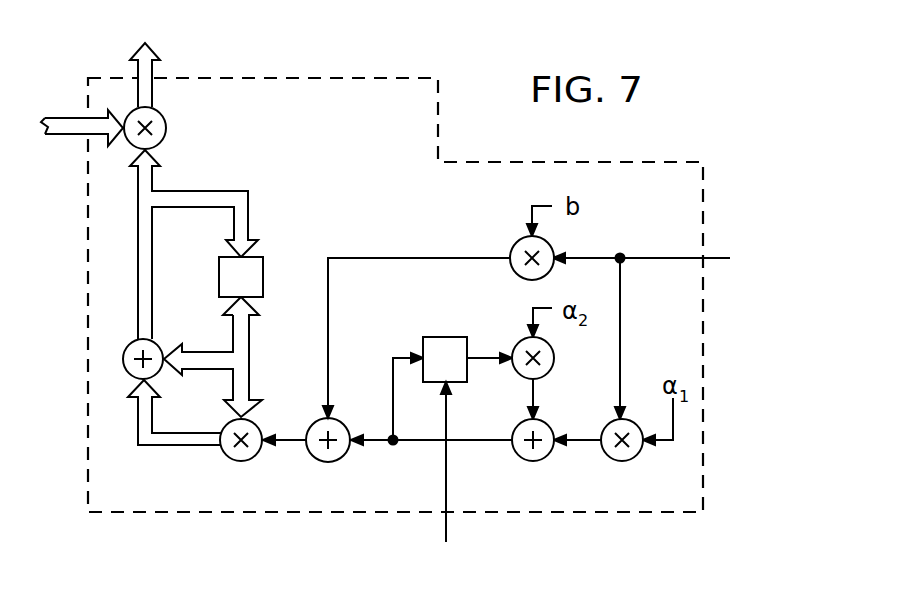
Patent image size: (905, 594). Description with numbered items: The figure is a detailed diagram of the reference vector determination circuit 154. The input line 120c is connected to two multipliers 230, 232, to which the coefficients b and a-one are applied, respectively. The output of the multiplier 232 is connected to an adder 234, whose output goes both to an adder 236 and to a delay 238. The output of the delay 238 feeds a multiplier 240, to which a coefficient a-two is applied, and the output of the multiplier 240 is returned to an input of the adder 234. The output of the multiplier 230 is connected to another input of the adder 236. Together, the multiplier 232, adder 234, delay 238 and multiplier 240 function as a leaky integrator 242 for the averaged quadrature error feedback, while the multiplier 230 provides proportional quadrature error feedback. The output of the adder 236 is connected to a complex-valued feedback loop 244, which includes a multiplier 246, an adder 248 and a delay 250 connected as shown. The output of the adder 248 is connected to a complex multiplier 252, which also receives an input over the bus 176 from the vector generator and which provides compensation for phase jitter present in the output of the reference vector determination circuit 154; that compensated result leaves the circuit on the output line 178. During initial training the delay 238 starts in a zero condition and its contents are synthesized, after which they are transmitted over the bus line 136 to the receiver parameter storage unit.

The input line 120c is at (712, 258).
The bus line 136 is at (448, 530).
The reference vector determination circuit 154 is at (277, 77).
The bus 176 is at (68, 118).
The output signal 178 is at (153, 54).
The multiplier 230 is at (518, 244).
The multiplier 232 is at (628, 462).
The adder 234 is at (531, 462).
The adder 236 is at (321, 462).
The delay 238 is at (436, 337).
The multiplier 240 is at (549, 364).
The leaky integrator 242 is at (433, 451).
The complex-valued feedback loop 244 is at (197, 450).
The multiplier 246 is at (227, 428).
The adder 248 is at (155, 346).
The delay 250 is at (219, 268).
The complex multiplier 252 is at (164, 131).